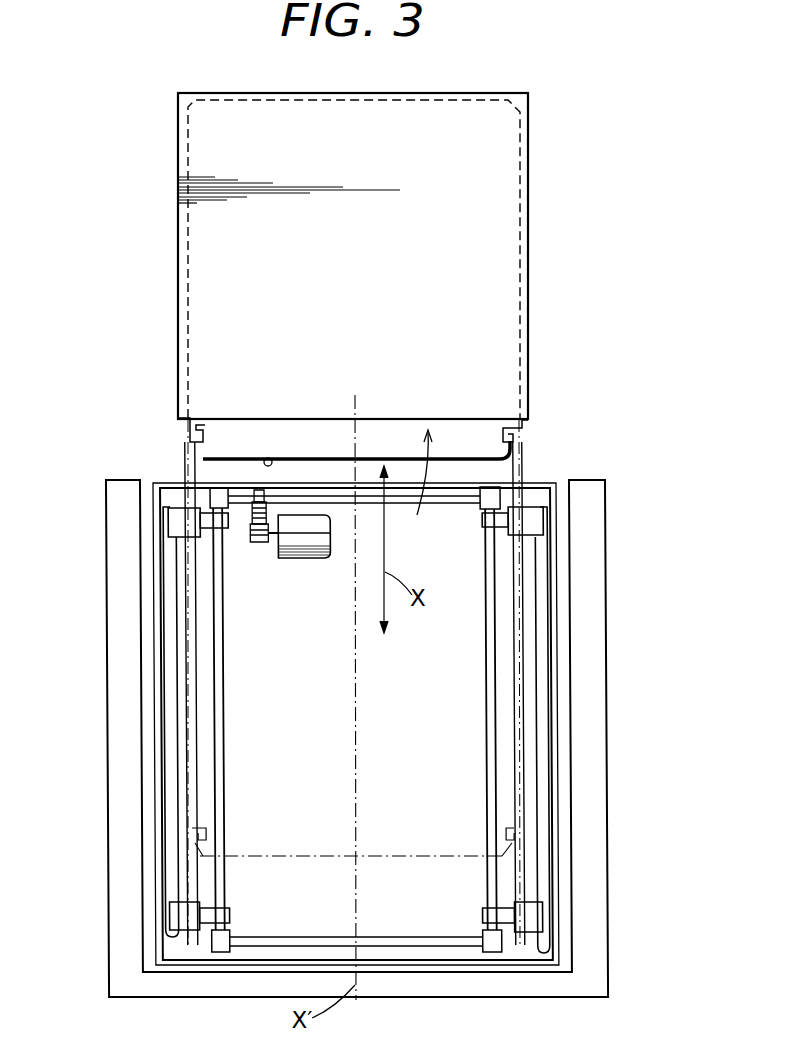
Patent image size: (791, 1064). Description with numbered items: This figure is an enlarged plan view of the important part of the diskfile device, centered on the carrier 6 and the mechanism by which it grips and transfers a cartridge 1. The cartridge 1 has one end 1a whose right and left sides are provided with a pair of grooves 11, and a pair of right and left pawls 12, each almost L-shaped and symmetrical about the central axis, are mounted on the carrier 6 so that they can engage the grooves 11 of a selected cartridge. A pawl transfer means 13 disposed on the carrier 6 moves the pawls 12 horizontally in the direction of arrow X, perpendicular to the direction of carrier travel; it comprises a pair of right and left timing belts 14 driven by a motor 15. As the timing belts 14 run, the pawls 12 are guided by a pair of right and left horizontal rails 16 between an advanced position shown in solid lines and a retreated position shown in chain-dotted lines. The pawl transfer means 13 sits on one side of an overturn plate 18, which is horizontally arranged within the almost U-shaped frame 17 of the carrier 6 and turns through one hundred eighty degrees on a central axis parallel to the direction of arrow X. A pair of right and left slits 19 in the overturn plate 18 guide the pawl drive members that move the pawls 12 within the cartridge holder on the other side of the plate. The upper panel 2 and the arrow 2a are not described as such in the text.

The cartridge 1 is at (478, 428).
The one end of the cartridge 1a is at (266, 456).
The upper panel 2 is at (524, 241).
The panel moving direction 2a is at (420, 489).
The carrier 6 is at (128, 458).
The grooves 11 is at (197, 428).
The pawls 12 is at (192, 463).
The pawl transfer means 13 is at (585, 527).
The timing belts 14 is at (218, 713).
The motor 15 is at (315, 545).
The horizontal rails 16 is at (187, 665).
The U-shaped frame 17 is at (595, 886).
The overturn plate 18 is at (415, 927).
The slits 19 is at (160, 598).